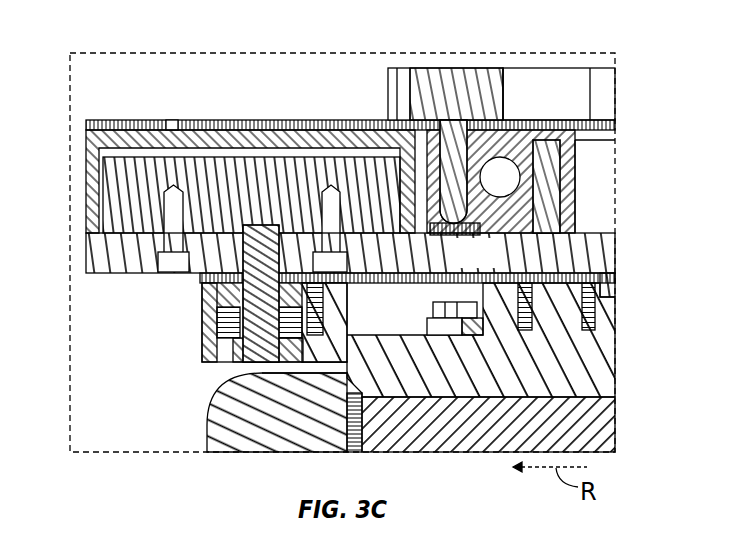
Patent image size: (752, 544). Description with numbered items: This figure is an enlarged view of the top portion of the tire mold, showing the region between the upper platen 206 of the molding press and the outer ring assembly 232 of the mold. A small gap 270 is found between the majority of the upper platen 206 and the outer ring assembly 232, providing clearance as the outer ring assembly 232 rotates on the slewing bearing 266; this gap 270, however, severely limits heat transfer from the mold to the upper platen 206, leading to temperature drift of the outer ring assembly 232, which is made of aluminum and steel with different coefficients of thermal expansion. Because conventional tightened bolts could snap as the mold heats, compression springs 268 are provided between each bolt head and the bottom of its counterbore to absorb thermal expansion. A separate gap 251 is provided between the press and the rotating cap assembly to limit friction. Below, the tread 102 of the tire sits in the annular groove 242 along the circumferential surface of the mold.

The tread 102 is at (227, 423).
The upper platen 206 is at (567, 105).
The outer ring assembly 232 is at (198, 273).
The annular groove 242 is at (250, 367).
The gap 251 is at (603, 178).
The slewing bearing 266 is at (464, 108).
The compression springs 268 is at (202, 332).
The gap 270 is at (217, 148).